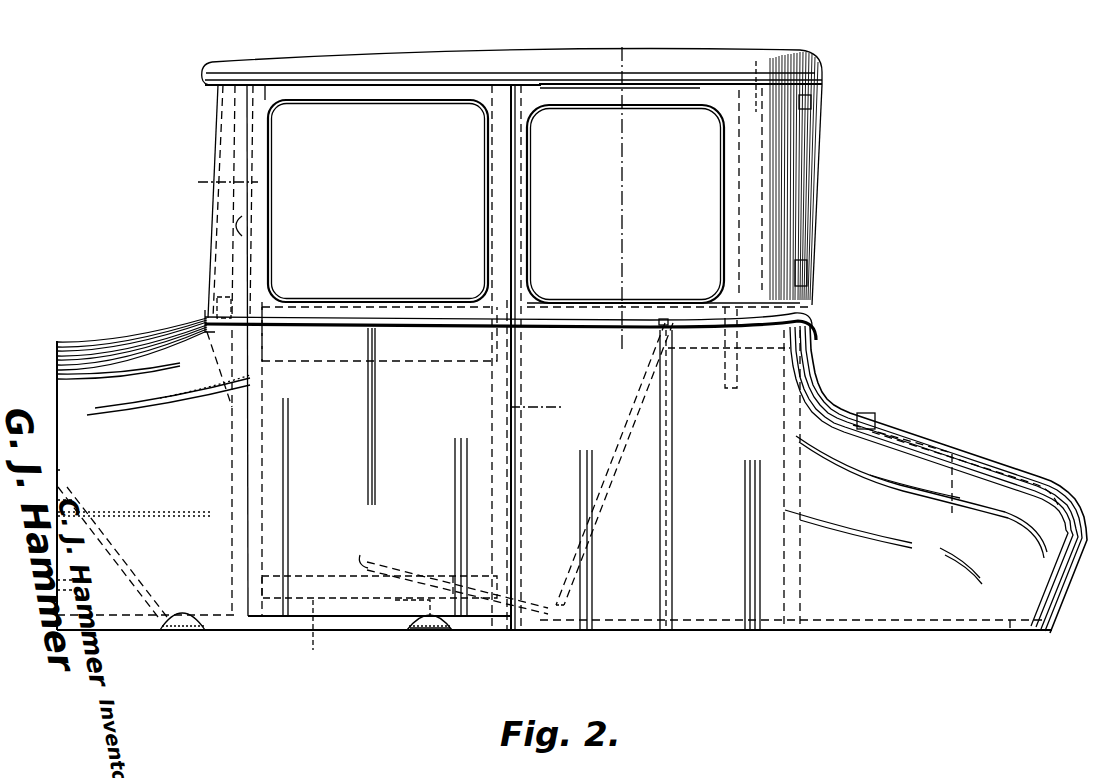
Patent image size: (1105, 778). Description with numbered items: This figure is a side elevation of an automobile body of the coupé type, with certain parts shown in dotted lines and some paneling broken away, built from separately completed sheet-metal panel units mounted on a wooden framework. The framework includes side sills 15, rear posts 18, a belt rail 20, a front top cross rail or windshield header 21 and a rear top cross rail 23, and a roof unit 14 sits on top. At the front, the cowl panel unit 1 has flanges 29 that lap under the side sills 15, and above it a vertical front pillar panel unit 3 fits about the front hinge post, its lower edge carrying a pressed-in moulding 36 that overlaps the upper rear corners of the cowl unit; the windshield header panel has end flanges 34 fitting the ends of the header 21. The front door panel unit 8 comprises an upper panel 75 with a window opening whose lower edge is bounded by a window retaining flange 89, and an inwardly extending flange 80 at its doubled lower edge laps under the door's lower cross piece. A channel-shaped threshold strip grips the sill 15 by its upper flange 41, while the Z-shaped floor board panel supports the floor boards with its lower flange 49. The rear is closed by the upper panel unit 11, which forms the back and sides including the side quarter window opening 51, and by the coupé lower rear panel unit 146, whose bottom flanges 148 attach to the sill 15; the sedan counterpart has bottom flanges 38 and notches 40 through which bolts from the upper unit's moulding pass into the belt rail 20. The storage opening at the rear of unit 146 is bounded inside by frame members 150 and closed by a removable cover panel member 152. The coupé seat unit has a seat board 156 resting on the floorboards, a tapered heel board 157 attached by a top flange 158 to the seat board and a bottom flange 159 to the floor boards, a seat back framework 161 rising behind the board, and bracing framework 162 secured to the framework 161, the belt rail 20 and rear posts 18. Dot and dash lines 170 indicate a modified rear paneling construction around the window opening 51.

The cowl panel unit 1 is at (85, 456).
The vertical front pillar panel unit 3 is at (222, 247).
The front door panel unit 8 is at (521, 350).
The panel unit for the upper part of the rear portion of the body 11 is at (556, 105).
The roof unit 14 is at (303, 70).
The side sill 15 is at (190, 625).
The rear post 18 is at (790, 466).
The belt rail 20 is at (814, 334).
The front top cross rail or windshield header 21 is at (206, 318).
The rear top cross rail 23 is at (519, 205).
The flanges 29 is at (178, 640).
The end flanges 34 is at (180, 360).
The pressed-in moulding 36 is at (646, 45).
The bottom flanges 38 is at (258, 200).
The perforations or notches 40 is at (297, 648).
The upper flange 41 is at (562, 425).
The lower flange 49 is at (740, 112).
The side quarter window opening 51 is at (625, 204).
The upper panel 75 is at (478, 262).
The inwardly extending flange 80 is at (445, 630).
The window retaining flange 89 is at (368, 328).
The panel unit for the lower part of the rear portion of the coupé body 146 is at (842, 402).
The bottom flanges 148 is at (386, 632).
The frame members 150 is at (892, 546).
The panel member 152 is at (1002, 456).
The seat board 156 is at (405, 566).
The heel board 157 is at (372, 586).
The top flange 158 is at (375, 566).
The bottom flange 159 is at (380, 612).
The framework 161 is at (600, 498).
The bracing framework 162 is at (702, 360).
The dot and dash lines 170 is at (702, 86).